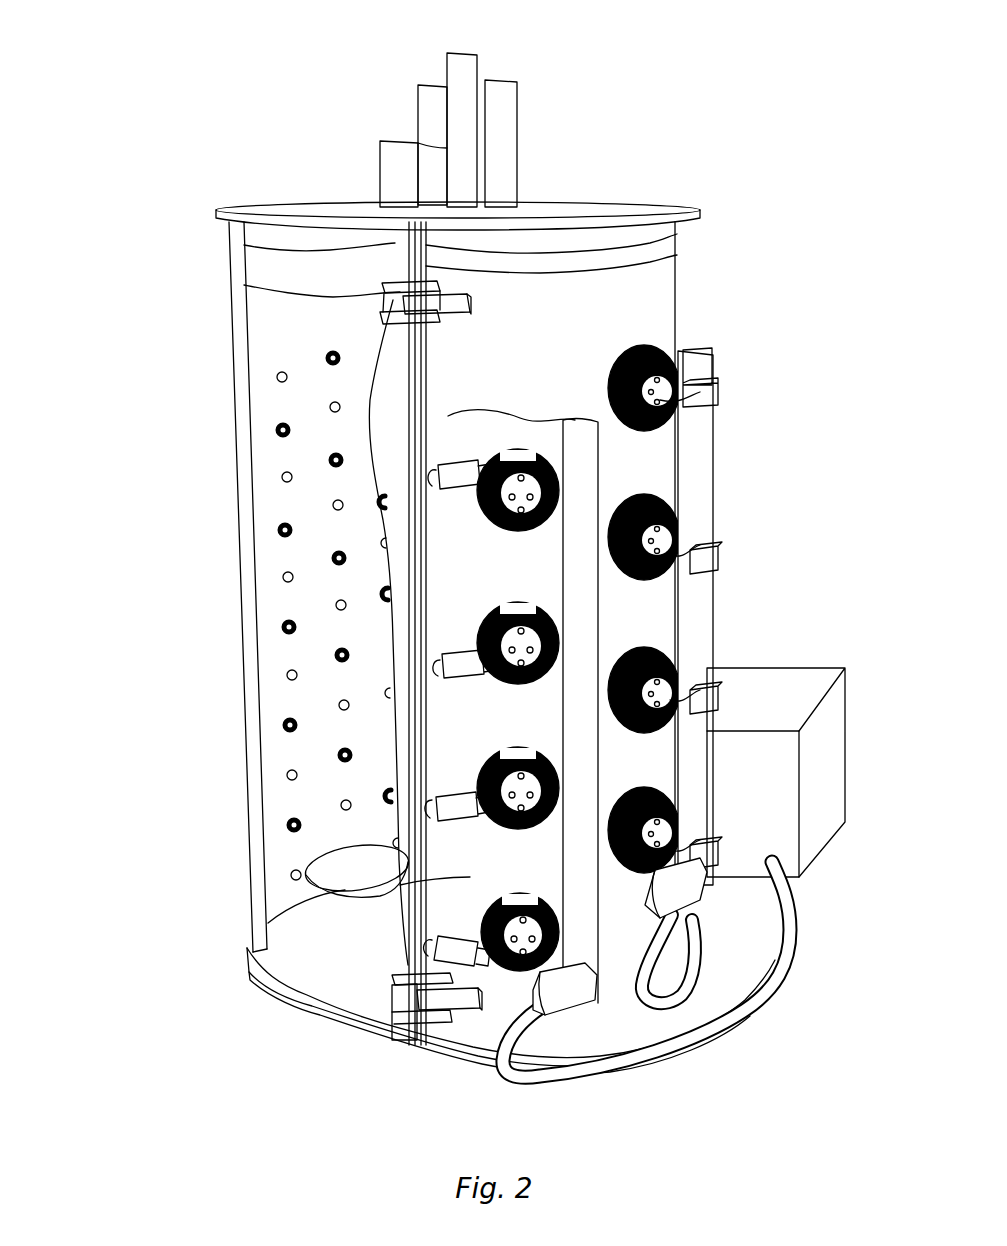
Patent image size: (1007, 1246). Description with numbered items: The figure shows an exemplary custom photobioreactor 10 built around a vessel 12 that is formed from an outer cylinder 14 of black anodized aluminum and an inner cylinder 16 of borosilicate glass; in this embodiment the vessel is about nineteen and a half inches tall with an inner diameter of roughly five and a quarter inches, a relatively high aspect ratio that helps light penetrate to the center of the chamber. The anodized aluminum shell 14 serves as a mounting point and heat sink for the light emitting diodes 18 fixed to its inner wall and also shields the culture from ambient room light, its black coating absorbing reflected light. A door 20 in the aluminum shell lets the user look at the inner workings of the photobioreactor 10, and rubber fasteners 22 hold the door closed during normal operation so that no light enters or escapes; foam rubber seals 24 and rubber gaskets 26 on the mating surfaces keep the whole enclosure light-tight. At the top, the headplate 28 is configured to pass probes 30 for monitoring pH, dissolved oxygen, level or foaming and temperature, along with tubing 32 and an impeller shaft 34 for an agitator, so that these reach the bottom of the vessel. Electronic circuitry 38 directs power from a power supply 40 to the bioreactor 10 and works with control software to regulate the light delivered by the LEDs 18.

The photobioreactor 10 is at (240, 86).
The vessel 12 is at (260, 400).
The outer cylinder 14 is at (228, 325).
The inner cylinder 16 is at (288, 577).
The light emitting diodes 18 is at (285, 530).
The door 20 is at (395, 243).
The rubber fasteners 22 is at (400, 292).
The foam rubber seals 24 is at (677, 255).
The rubber gaskets 26 is at (677, 234).
The headplate 28 is at (538, 206).
The probes 30 is at (503, 85).
The tubing 32 is at (447, 75).
The impeller shaft 34 is at (327, 870).
The electronic circuitry 38 is at (640, 1047).
The power supply 40 is at (752, 693).